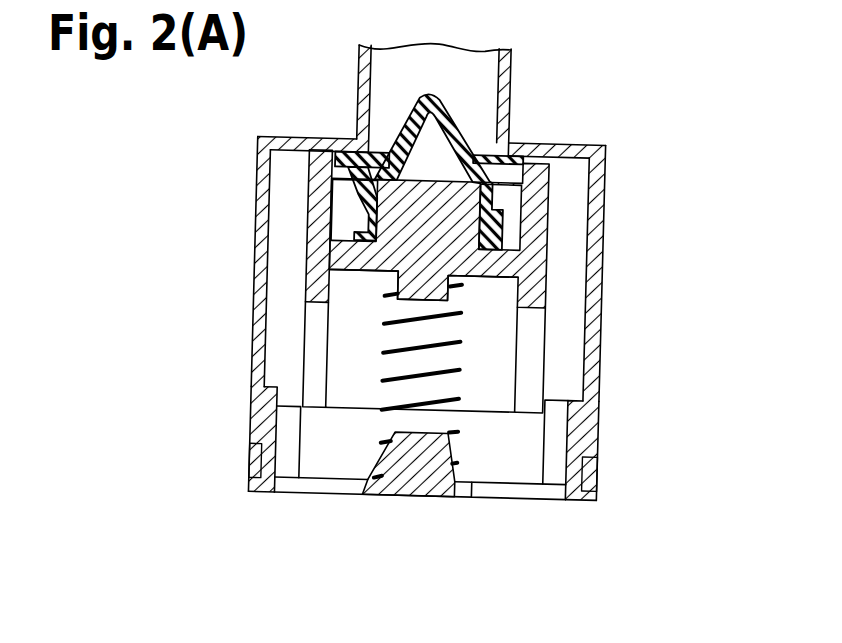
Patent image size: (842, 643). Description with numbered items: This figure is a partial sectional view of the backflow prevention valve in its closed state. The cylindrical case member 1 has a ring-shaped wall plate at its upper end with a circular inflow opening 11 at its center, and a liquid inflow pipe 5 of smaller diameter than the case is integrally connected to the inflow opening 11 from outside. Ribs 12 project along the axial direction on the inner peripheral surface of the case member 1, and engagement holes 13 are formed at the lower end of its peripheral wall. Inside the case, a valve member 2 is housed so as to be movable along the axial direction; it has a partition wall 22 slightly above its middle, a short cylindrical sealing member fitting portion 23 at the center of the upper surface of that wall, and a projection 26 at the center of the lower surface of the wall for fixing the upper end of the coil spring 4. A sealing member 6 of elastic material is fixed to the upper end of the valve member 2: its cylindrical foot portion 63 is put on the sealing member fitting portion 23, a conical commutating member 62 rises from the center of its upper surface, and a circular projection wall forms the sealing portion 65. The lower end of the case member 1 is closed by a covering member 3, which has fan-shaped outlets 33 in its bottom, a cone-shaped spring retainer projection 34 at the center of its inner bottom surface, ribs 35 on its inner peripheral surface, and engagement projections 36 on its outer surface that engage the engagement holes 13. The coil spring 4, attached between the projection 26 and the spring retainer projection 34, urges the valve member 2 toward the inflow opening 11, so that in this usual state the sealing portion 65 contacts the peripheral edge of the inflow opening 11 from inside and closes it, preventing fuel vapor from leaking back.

The case member 1 is at (605, 207).
The valve member 2 is at (312, 240).
The covering member 3 is at (260, 493).
The coil spring 4 is at (457, 340).
The liquid inflow pipe 5 is at (508, 58).
The sealing member 6 is at (320, 139).
The inflow opening 11 is at (486, 150).
The ribs 12 is at (258, 323).
The engagement holes 13 is at (253, 418).
The partition wall 22 is at (340, 290).
The sealing member fitting portion 23 is at (350, 235).
The projection 26 is at (548, 262).
The outlets 33 is at (333, 490).
The spring retainer projection 34 is at (418, 493).
The ribs 35 is at (258, 483).
The engagement projections 36 is at (250, 440).
The conical commutating member 62 is at (412, 108).
The foot portion 63 is at (307, 176).
The sealing portion 65 is at (527, 145).